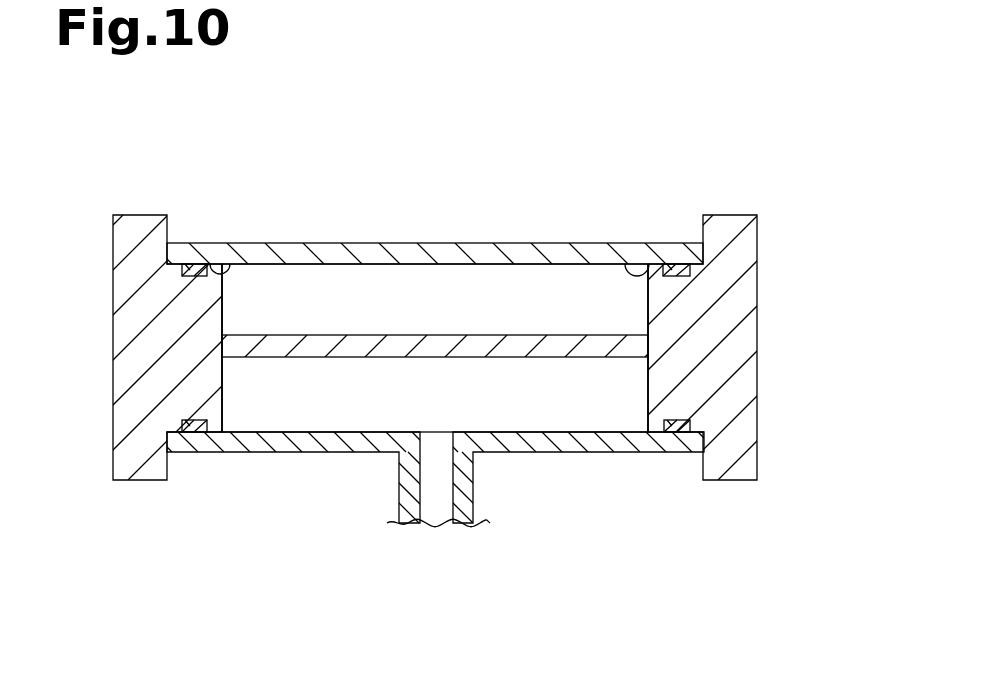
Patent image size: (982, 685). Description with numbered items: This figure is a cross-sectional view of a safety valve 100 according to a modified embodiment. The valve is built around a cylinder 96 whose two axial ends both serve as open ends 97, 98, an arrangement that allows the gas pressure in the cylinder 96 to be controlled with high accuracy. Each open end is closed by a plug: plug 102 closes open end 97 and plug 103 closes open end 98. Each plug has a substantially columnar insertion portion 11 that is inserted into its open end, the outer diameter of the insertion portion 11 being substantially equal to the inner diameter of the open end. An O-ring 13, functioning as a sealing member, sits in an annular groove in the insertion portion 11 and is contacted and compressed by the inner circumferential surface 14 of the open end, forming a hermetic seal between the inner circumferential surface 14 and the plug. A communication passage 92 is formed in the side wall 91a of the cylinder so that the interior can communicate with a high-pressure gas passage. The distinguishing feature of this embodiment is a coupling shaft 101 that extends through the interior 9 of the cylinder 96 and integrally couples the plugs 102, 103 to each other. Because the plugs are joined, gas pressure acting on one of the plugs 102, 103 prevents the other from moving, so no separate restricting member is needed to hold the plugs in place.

The safety valve 100 is at (588, 126).
The plug 102 is at (113, 357).
The plug 103 is at (760, 322).
The cylinder 96 is at (435, 243).
The interior 9 is at (447, 316).
The coupling shaft 101 is at (364, 348).
The side wall 91a is at (353, 443).
The communication passage 92 is at (450, 489).
The open end 97 is at (178, 251).
The open end 98 is at (682, 250).
The inner circumferential surface 14 is at (225, 268).
The insertion portion 11 is at (213, 305).
The O-ring 13 is at (212, 440).